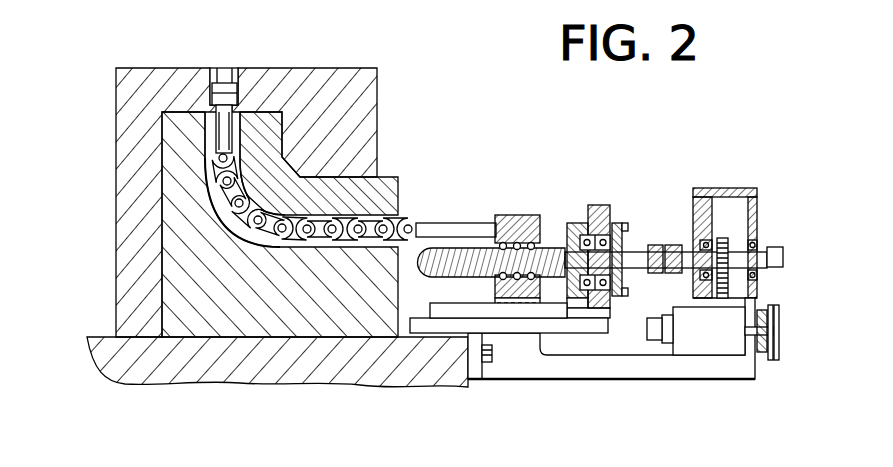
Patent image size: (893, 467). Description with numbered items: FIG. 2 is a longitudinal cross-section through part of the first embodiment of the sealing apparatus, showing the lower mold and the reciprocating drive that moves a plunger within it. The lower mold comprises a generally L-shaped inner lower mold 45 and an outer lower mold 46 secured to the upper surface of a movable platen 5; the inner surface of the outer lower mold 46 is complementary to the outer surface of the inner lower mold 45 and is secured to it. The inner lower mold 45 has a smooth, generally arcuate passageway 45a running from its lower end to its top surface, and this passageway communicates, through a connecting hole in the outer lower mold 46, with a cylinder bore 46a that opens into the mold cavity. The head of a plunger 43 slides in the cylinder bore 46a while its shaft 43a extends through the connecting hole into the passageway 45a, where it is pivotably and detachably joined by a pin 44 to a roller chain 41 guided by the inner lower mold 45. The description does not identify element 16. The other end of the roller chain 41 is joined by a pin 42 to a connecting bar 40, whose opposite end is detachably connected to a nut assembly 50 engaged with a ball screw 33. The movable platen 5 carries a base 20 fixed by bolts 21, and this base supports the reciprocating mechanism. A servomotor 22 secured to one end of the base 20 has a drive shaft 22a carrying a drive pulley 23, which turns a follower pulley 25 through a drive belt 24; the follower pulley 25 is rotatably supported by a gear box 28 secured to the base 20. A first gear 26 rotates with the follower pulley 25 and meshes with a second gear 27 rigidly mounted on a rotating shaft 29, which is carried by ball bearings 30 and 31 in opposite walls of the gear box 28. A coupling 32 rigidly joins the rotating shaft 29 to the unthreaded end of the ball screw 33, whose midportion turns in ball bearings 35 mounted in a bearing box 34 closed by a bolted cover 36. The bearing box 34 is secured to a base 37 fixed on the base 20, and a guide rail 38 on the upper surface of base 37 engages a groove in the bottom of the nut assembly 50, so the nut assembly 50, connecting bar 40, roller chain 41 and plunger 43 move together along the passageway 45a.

The movable platen 5 is at (135, 377).
The bolt 16 is at (225, 78).
The base 20 is at (618, 375).
The bolts 21 is at (492, 363).
The servomotor 22 is at (695, 345).
The drive shaft 22a is at (748, 332).
The drive pulley 23 is at (778, 350).
The drive belt 24 is at (776, 327).
The follower pulley 25 is at (781, 310).
The first gear 26 is at (738, 291).
The second gear 27 is at (726, 240).
The gear box 28 is at (736, 188).
The rotating shaft 29 is at (738, 272).
The ball bearing 30 is at (696, 240).
The ball bearing 31 is at (758, 230).
The coupling 32 is at (670, 245).
The ball screw 33 is at (556, 245).
The bearing box 34 is at (592, 205).
The ball bearings 35 is at (618, 222).
The cover 36 is at (628, 224).
The base 37 is at (578, 325).
The guide rail 38 is at (520, 310).
The connecting bar 40 is at (462, 223).
The roller chain 41 is at (338, 208).
The pin 42 is at (411, 222).
The plunger 43 is at (240, 104).
The shaft 43a is at (220, 134).
The pin 44 is at (288, 118).
The inner lower mold 45 is at (232, 317).
The passageway 45a is at (281, 250).
The outer lower mold 46 is at (117, 88).
The cylinder bore 46a is at (212, 75).
The nut assembly 50 is at (512, 215).